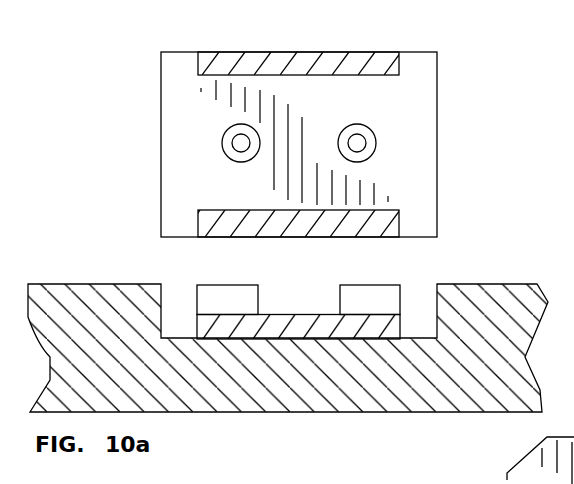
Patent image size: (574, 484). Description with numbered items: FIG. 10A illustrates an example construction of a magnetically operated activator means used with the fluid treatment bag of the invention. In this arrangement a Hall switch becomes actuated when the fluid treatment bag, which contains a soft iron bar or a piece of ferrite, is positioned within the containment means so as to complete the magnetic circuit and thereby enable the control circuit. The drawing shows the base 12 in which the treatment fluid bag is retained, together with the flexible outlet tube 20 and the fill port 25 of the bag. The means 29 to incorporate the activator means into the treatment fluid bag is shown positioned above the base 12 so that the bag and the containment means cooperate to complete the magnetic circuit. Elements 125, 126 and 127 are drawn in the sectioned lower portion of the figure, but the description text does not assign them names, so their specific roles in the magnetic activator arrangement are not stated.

The base 12 is at (208, 362).
The flexible outlet tube 20 is at (228, 140).
The fill port 25 is at (372, 137).
The means to incorporate activator means into the treatment fluid bag 29 is at (437, 170).
The pedestal block 125 is at (205, 284).
The pedestal block 126 is at (380, 300).
The bonding layer 127 is at (289, 54).